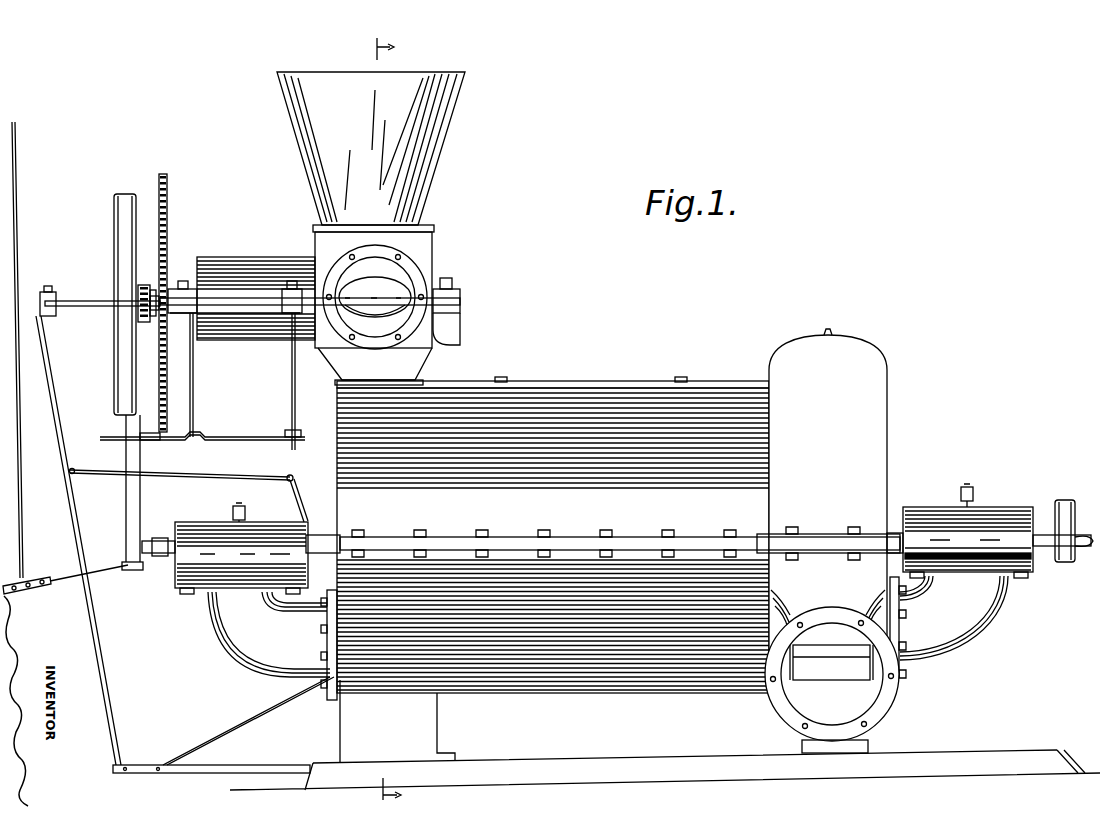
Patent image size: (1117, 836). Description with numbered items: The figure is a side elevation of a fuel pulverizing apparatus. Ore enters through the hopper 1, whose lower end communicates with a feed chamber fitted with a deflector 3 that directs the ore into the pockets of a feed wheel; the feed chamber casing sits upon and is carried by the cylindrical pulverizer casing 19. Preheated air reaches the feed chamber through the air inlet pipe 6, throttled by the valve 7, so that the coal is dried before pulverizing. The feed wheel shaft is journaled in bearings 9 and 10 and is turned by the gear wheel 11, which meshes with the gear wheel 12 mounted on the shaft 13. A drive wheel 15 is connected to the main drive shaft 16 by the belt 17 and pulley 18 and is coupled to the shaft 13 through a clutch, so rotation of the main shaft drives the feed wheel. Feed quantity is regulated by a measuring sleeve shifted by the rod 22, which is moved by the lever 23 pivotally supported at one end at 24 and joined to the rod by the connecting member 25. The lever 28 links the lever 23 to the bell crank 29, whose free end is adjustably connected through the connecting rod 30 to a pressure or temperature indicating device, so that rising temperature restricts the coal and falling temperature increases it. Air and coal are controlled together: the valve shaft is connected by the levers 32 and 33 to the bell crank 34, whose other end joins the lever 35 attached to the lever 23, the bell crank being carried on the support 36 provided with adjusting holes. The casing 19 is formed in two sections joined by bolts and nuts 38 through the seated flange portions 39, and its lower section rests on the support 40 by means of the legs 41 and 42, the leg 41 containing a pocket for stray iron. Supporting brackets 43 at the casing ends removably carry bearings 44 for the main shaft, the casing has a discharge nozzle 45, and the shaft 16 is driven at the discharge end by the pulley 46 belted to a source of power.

The hopper 1 is at (445, 132).
The deflector 3 is at (385, 418).
The air inlet pipe 6 is at (455, 267).
The valve 7 is at (378, 306).
The bearing 9 is at (188, 292).
The bearing 10 is at (468, 292).
The gear wheel 11 is at (167, 174).
The gear wheel 12 is at (148, 298).
The shaft 13 is at (138, 318).
The drive wheel 15 is at (114, 232).
The main drive shaft 16 is at (162, 566).
The belt 17 is at (141, 510).
The pulley 18 is at (148, 538).
The pulverizer casing 19 is at (565, 380).
The rod 22 is at (110, 303).
The lever 23 is at (60, 376).
The pivot 24 is at (130, 775).
The connecting member 25 is at (57, 289).
The lever 28 is at (180, 472).
The bell crank 29 is at (300, 505).
The connecting rod 30 is at (20, 445).
The lever 32 is at (296, 376).
The lever 33 is at (290, 435).
The bell crank 34 is at (240, 425).
The lever 35 is at (146, 436).
The support 36 is at (193, 376).
The bolts and nuts 38 is at (358, 532).
The flange portions 39 is at (518, 530).
The support 40 is at (998, 735).
The leg 41 is at (446, 736).
The leg 42 is at (895, 745).
The supporting brackets 43 is at (240, 640).
The bearings 44 is at (233, 512).
The discharge nozzle 45 is at (882, 672).
The pulley 46 is at (1065, 500).